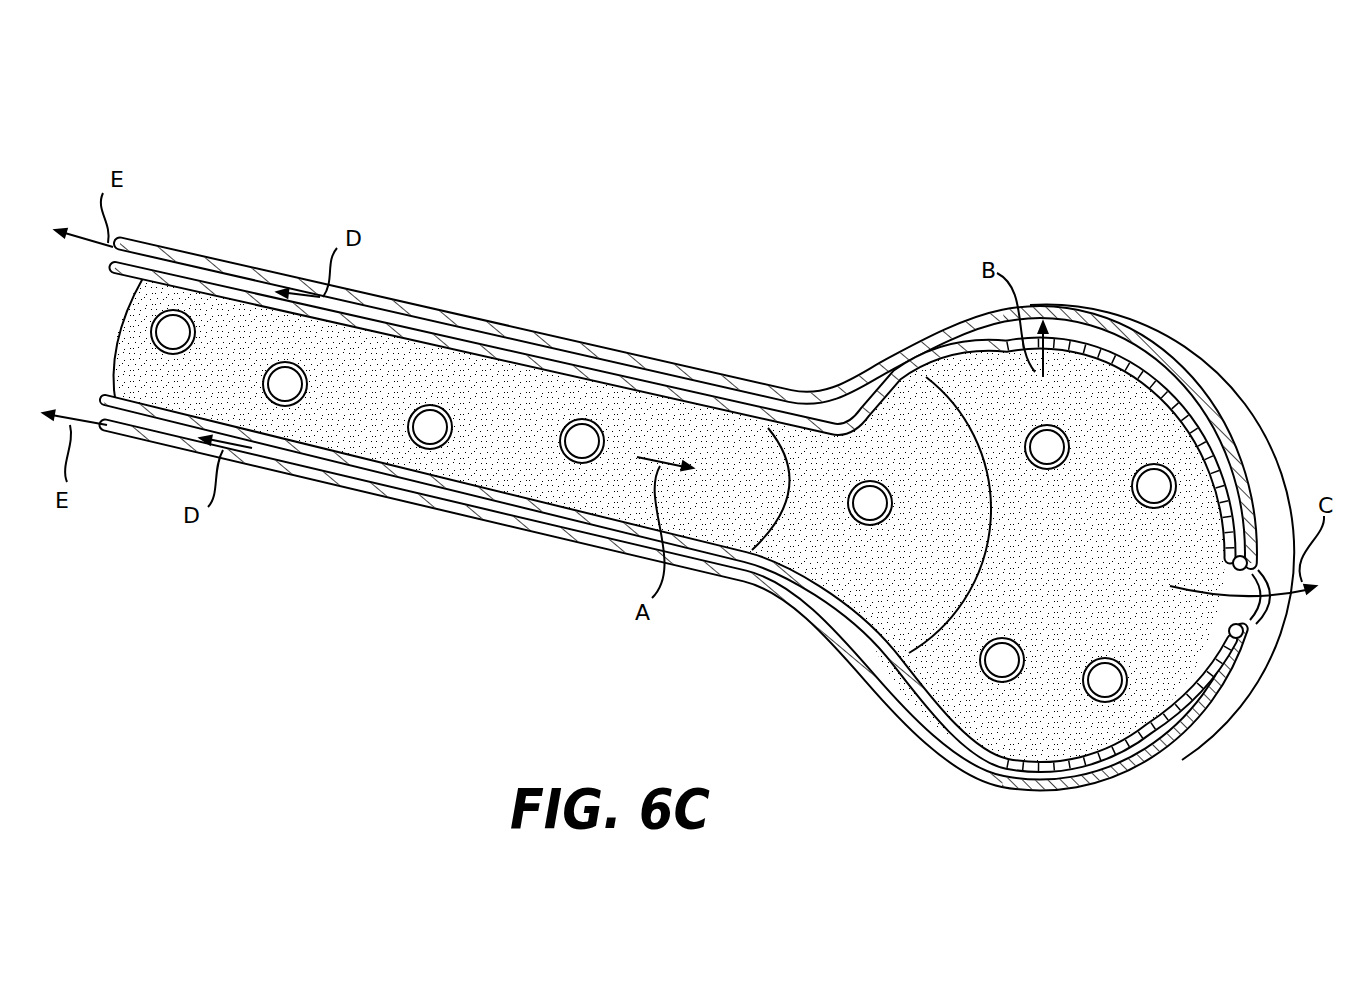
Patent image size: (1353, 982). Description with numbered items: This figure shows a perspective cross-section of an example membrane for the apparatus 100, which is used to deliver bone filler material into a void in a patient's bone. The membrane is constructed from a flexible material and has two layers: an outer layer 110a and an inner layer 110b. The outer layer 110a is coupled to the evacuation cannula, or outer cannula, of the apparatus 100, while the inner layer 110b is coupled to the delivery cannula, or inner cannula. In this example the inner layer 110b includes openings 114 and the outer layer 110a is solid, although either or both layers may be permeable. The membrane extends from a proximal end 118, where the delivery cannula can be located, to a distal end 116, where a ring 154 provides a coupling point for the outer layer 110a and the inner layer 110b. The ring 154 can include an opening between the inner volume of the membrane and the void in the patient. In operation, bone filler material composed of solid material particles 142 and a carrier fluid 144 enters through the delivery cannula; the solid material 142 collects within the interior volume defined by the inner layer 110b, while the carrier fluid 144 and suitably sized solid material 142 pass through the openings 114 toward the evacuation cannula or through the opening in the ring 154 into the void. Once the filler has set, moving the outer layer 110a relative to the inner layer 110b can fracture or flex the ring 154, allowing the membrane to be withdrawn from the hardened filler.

The apparatus 100 is at (1170, 252).
The outer layer 110a is at (1092, 393).
The inner layer 110b is at (1183, 381).
The openings 114 is at (873, 390).
The distal end 116 is at (1281, 391).
The proximal end 118 is at (235, 142).
The solid material particles 142 is at (167, 357).
The carrier fluid 144 is at (332, 413).
The ring 154 is at (1240, 640).